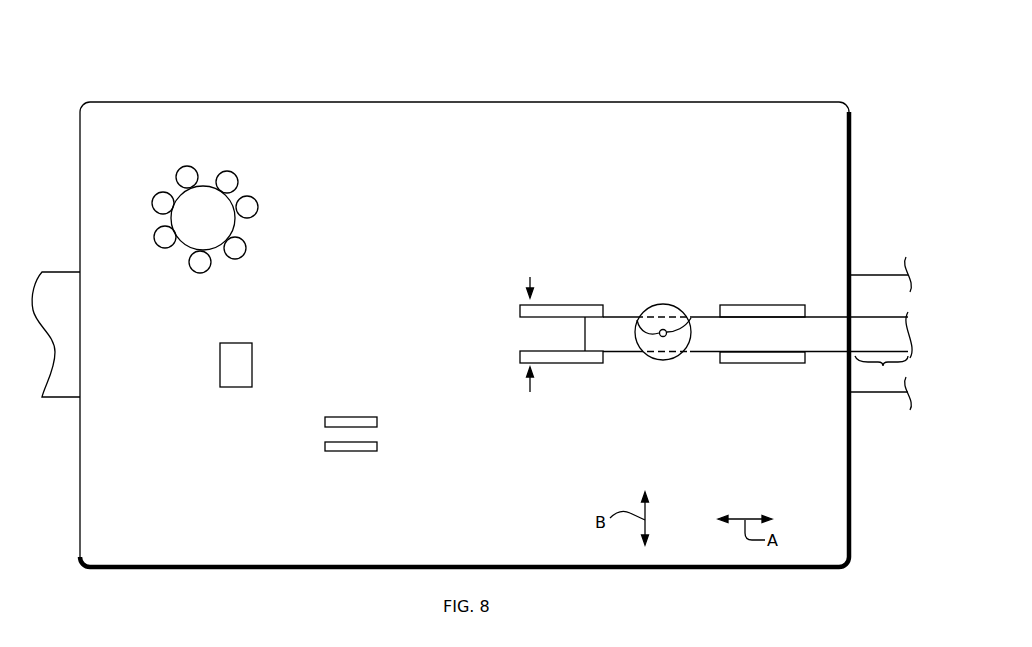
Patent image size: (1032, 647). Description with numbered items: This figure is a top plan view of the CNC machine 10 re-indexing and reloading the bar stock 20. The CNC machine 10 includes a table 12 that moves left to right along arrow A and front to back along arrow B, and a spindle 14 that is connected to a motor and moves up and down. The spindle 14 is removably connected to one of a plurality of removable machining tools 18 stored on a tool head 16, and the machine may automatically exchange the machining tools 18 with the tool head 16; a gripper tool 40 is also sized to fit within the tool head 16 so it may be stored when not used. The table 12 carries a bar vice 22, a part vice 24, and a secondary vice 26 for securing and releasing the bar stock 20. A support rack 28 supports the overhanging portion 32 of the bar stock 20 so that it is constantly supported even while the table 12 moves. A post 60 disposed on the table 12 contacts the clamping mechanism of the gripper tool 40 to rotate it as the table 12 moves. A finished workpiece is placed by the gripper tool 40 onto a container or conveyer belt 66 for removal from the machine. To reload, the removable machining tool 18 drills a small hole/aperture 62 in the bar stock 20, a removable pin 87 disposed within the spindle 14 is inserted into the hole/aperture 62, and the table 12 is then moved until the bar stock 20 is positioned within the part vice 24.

The CNC machine 10 is at (640, 31).
The table 12 is at (462, 101).
The spindle 14 is at (661, 332).
The tool head 16 is at (371, 241).
The removable machining tool 18 is at (155, 236).
The bar stock 20 is at (822, 354).
The bar vice 22 is at (757, 280).
The part vice 24 is at (553, 271).
The secondary vice 26 is at (340, 489).
The support rack 28 is at (865, 275).
The overhanging portion 32 is at (881, 370).
The gripper tool 40 is at (258, 204).
The post 60 is at (252, 362).
The hole/aperture 62 is at (687, 318).
The container or conveyer belt 66 is at (68, 397).
The removable pin 87 is at (663, 337).